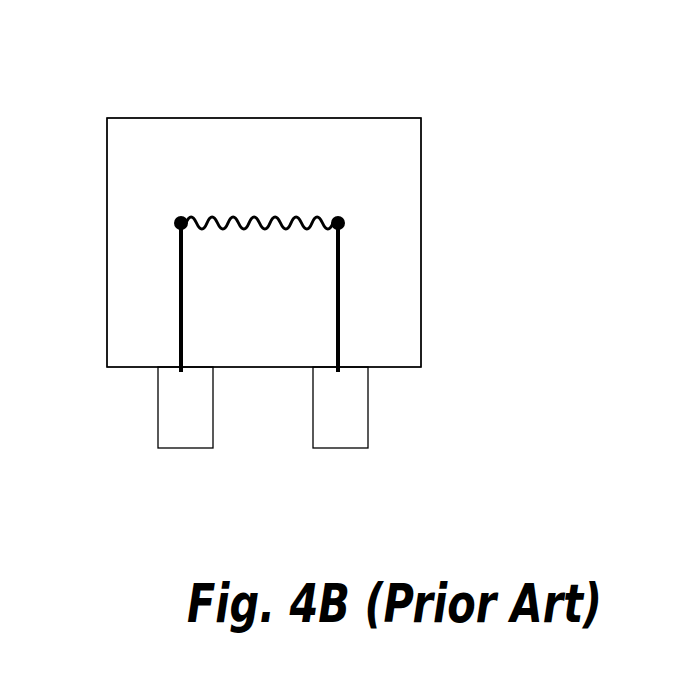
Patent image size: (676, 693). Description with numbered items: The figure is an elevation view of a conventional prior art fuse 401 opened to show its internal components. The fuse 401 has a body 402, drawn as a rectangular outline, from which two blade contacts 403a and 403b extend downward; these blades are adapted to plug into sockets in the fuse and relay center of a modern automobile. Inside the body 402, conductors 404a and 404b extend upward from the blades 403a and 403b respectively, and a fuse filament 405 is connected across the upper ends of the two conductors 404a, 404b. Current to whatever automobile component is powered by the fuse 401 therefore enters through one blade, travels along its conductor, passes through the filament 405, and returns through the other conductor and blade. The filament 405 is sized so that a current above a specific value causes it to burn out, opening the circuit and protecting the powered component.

The conventional fuse 401 is at (339, 108).
The body 402 is at (153, 118).
The blade contact 403a is at (177, 403).
The blade contact 403b is at (335, 404).
The conductor 404a is at (179, 255).
The conductor 404b is at (341, 255).
The fuse filament 405 is at (227, 213).